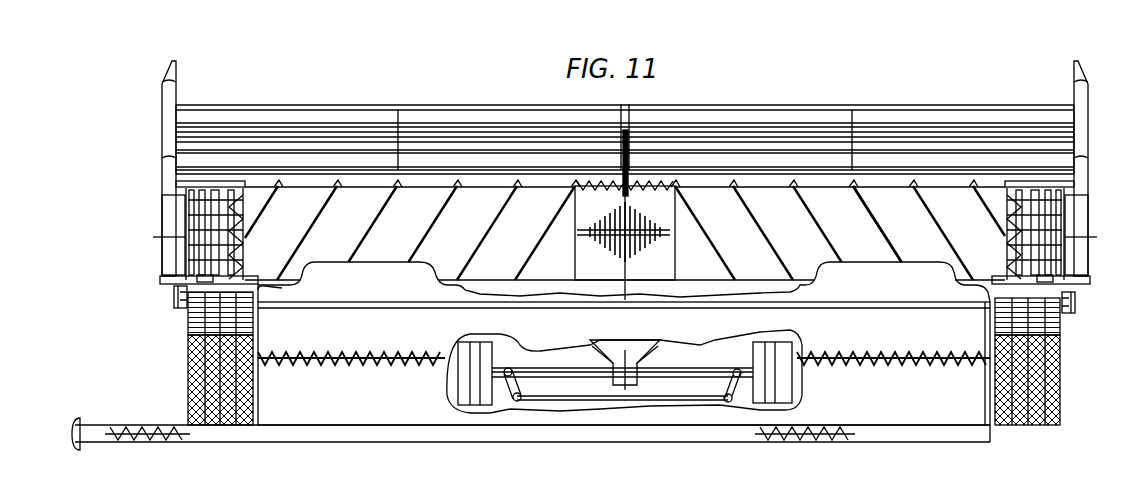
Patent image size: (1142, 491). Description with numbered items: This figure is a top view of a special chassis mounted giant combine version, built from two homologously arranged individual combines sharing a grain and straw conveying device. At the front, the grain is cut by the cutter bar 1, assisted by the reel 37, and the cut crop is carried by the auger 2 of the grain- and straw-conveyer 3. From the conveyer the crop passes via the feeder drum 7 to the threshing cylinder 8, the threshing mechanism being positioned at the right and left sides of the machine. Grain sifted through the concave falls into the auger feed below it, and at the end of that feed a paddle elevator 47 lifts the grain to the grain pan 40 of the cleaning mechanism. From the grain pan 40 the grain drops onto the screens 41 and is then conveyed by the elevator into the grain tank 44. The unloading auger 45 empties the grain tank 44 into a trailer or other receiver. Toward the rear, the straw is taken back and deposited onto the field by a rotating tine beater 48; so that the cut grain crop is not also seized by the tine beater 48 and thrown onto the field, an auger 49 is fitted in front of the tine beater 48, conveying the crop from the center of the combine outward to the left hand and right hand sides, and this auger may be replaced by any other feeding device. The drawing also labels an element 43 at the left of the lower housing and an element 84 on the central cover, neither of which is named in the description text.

The cutter bar 1 is at (513, 173).
The auger 2 is at (804, 196).
The grain- and straw-conveyer 3 is at (880, 198).
The feeder drum 7 is at (1017, 255).
The threshing cylinder 8 is at (1060, 277).
The reel 37 is at (851, 108).
The grain pan 40 is at (1050, 318).
The screens 41 is at (1052, 372).
The screw conveyor 43 is at (257, 357).
The grain tank 44 is at (870, 413).
The unloading auger 45 is at (107, 437).
The paddle elevator 47 is at (1073, 307).
The rotating tine beater 48 is at (665, 186).
The auger 49 is at (590, 186).
The cover housing 84 is at (624, 282).